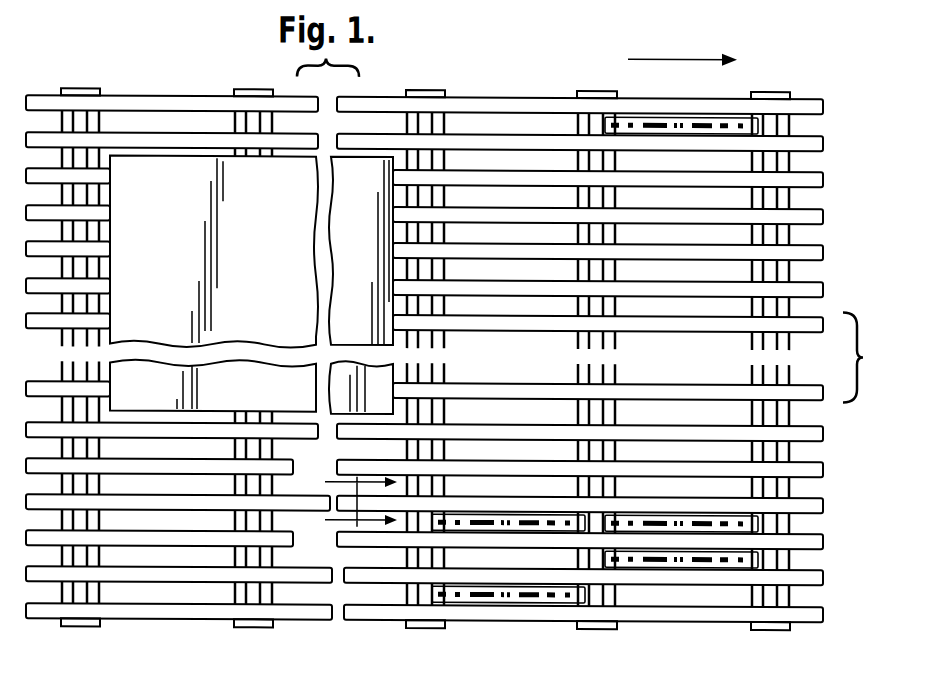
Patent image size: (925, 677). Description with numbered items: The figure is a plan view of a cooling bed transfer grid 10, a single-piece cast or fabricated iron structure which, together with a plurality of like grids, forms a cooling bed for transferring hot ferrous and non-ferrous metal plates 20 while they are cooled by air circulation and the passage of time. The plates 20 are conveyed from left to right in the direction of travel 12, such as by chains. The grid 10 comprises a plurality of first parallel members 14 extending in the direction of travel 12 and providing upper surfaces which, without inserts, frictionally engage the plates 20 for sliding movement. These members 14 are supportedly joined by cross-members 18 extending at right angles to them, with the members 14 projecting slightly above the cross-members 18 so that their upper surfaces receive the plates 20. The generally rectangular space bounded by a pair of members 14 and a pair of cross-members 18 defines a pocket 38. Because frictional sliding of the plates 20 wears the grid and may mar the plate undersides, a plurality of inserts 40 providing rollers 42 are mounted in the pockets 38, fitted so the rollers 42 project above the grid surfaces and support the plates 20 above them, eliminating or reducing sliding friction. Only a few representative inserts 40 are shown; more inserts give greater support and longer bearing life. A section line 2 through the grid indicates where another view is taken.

The transfer grid 10 is at (518, 87).
The direction of travel 12 is at (659, 56).
The first parallel members 14 is at (802, 169).
The cross-members 18 is at (577, 371).
The metal plates 20 is at (175, 180).
The pocket 38 is at (710, 226).
The insert 40 is at (709, 111).
The roller 42 is at (683, 560).
The section line 2- 2 is at (350, 505).